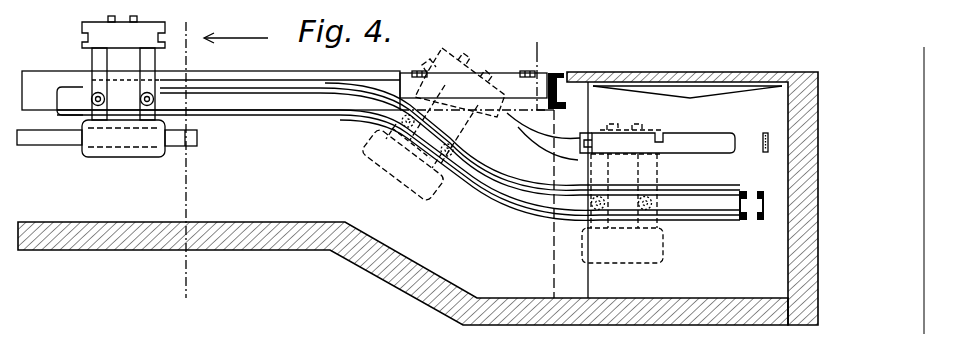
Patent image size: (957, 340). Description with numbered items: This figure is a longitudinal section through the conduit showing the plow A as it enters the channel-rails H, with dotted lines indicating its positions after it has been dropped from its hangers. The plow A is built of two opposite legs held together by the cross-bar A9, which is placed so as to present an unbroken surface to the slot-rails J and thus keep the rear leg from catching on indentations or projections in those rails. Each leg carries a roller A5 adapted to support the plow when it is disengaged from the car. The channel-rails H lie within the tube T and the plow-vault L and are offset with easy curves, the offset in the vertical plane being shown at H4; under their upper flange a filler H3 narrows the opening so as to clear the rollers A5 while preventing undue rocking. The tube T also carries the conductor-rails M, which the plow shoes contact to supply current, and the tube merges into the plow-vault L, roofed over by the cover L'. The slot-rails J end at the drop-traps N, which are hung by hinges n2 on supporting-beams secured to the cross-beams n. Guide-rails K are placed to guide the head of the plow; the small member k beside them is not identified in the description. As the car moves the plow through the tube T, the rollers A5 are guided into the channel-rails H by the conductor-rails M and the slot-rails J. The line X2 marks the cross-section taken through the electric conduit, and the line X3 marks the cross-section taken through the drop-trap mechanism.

The plow A is at (123, 96).
The rollers A5 is at (158, 100).
The cross-bar A9 is at (125, 77).
The slot-rails J is at (281, 71).
The conductor-rails M is at (107, 139).
The channel-rails H is at (750, 227).
The filler H3 is at (377, 90).
The vertical offset of channel-rails H4 is at (420, 163).
The drop-traps N is at (473, 84).
The cross-beams n is at (558, 95).
The hinges n2 is at (461, 106).
The guide-rails K is at (730, 138).
The hook / rods k is at (580, 134).
The plow-vault L is at (685, 190).
The cover plate L' is at (692, 184).
The tube T is at (403, 249).
The section line X2 is at (189, 163).
The section line X3 is at (547, 161).